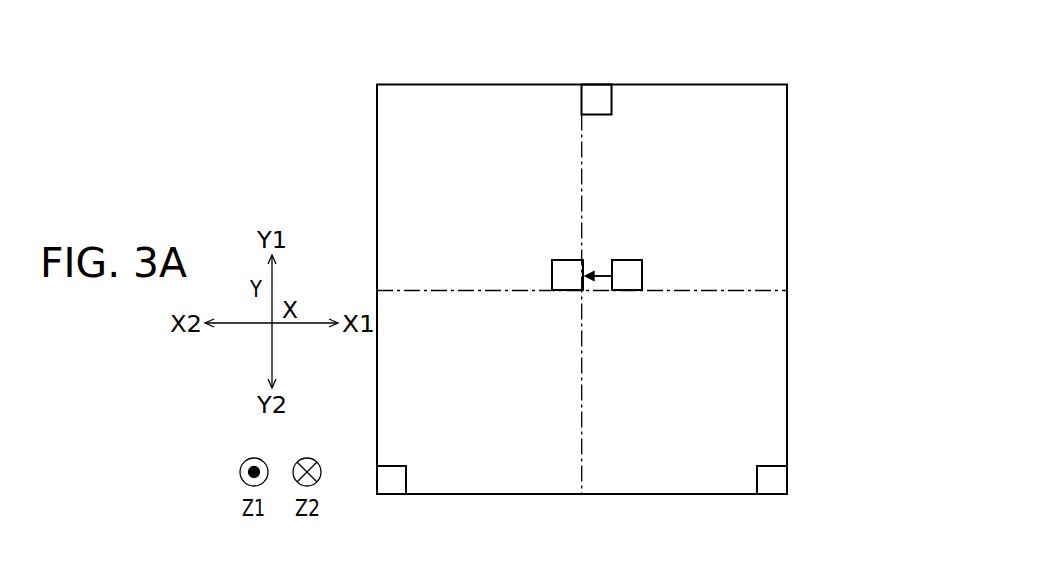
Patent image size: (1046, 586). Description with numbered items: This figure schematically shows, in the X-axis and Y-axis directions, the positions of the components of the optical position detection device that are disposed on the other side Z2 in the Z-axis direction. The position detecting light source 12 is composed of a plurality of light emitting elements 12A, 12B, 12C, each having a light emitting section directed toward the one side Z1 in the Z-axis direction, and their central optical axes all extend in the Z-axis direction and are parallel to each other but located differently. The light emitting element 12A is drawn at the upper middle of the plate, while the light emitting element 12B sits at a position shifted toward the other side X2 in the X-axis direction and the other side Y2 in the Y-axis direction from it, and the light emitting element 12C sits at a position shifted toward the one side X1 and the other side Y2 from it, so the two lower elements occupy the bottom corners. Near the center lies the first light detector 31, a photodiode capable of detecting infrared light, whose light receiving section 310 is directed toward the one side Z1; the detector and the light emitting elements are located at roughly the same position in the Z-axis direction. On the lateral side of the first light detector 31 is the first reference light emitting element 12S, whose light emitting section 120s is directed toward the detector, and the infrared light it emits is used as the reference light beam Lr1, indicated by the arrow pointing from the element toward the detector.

The position detecting light source 12 is at (615, 288).
The light emitting element 12A is at (598, 82).
The light emitting element 12B is at (392, 490).
The light emitting element 12C is at (773, 490).
The first light detector 31 is at (552, 268).
The light receiving section 310 is at (556, 282).
The first reference light emitting element 12S is at (633, 268).
The light emitting section 120s is at (603, 272).
The reference light beam Lr1 is at (603, 280).